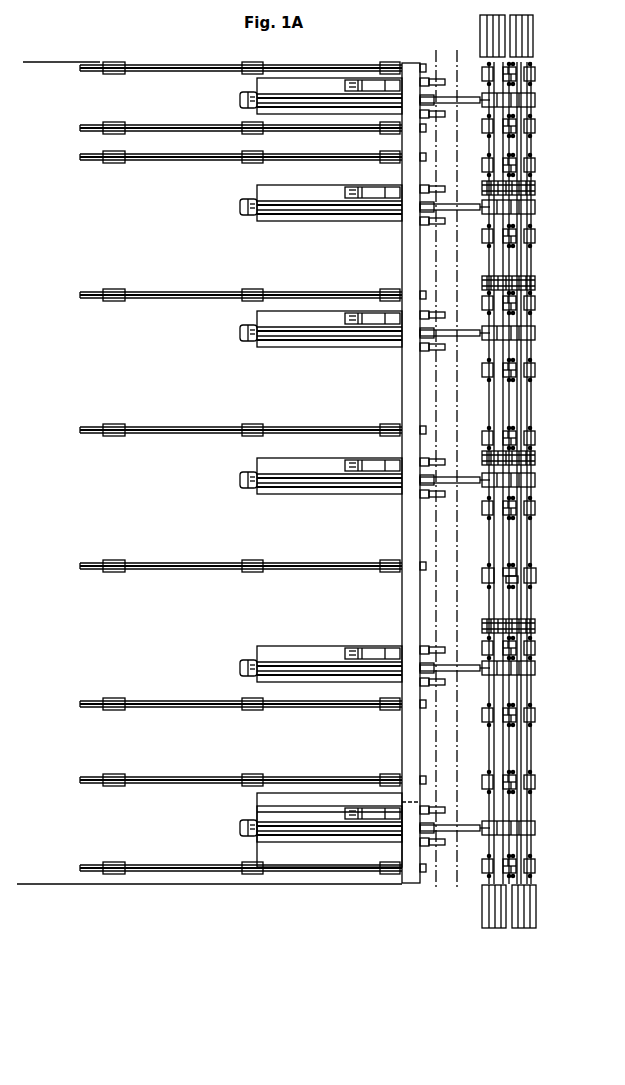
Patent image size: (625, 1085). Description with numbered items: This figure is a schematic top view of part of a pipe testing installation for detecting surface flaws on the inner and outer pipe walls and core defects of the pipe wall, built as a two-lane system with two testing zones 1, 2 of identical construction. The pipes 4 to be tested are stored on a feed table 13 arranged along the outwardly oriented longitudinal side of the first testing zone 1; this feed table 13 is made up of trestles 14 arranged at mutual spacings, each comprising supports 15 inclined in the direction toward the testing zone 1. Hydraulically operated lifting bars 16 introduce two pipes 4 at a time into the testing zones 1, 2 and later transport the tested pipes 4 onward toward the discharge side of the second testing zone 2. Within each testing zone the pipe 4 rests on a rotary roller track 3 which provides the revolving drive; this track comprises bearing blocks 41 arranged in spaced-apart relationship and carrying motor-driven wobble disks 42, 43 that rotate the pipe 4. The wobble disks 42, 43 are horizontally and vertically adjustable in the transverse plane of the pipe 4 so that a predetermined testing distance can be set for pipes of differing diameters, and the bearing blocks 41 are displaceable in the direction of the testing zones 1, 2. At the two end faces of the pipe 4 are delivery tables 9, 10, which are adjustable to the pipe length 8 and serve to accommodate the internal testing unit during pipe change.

The first testing zone 1 is at (477, 70).
The second testing zone 2 is at (538, 72).
The rotary roller track 3 is at (489, 540).
The pipe 4 is at (412, 723).
The pipe length 8 is at (41, 63).
The delivery table 9 is at (480, 902).
The delivery table 10 is at (478, 42).
The feed table 13 is at (181, 60).
The trestles 14 is at (113, 440).
The supports 15 is at (198, 571).
The lifting bars 16 is at (470, 673).
The bearing blocks 41 is at (534, 571).
The wobble disk 42 is at (531, 586).
The wobble disk 43 is at (518, 590).